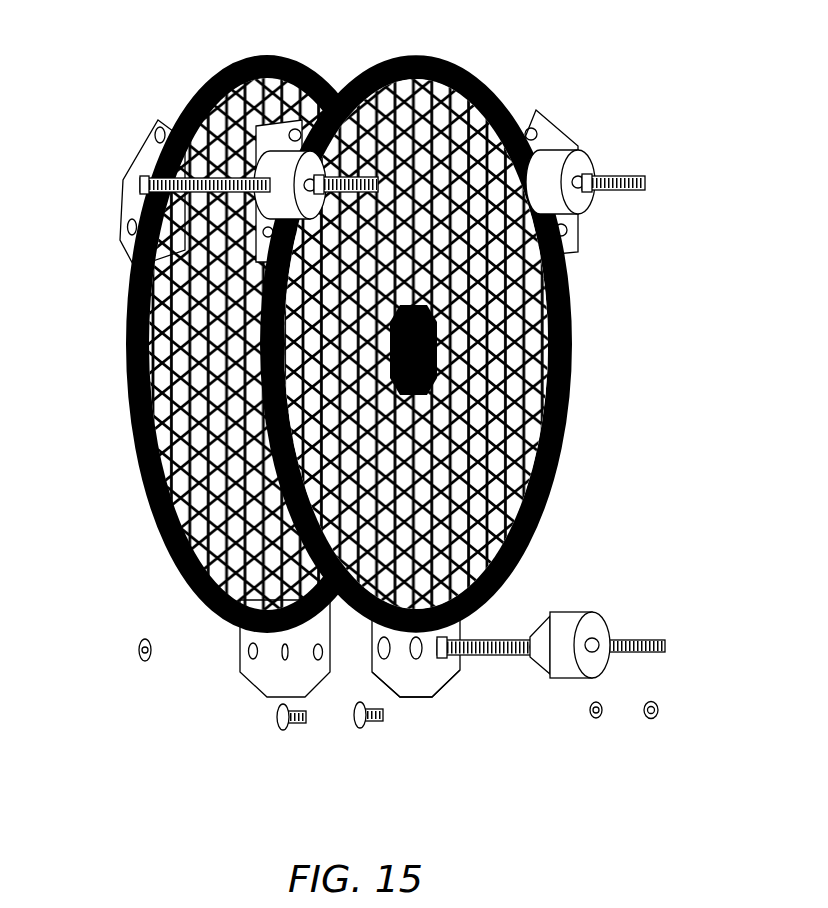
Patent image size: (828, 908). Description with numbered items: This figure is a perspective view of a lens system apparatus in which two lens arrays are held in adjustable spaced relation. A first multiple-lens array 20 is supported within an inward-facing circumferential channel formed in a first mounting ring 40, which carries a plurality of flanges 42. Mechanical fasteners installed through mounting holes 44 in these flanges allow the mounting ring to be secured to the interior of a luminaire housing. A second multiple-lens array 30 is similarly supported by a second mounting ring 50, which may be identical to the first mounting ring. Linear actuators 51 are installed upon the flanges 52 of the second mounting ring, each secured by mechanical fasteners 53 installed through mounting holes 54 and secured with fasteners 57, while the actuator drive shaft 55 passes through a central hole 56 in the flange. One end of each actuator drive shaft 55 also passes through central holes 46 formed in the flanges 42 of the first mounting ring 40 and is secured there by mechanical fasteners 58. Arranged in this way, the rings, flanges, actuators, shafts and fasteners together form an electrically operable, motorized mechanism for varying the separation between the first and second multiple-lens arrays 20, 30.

The first multiple-lens array 20 is at (229, 56).
The second multiple-lens array 30 is at (460, 56).
The first mounting ring 40 is at (124, 374).
The second mounting ring 50 is at (572, 372).
The flanges 42 is at (218, 668).
The mounting holes 44 is at (253, 660).
The central holes 46 is at (283, 660).
The linear actuators 51 is at (574, 628).
The flanges 52 is at (448, 678).
The mechanical fasteners 53 is at (280, 729).
The mounting holes 54 is at (405, 700).
The actuator drive shaft 55 is at (627, 640).
The central hole 56 is at (420, 660).
The fasteners 57 is at (600, 718).
The mechanical fasteners 58 is at (136, 642).